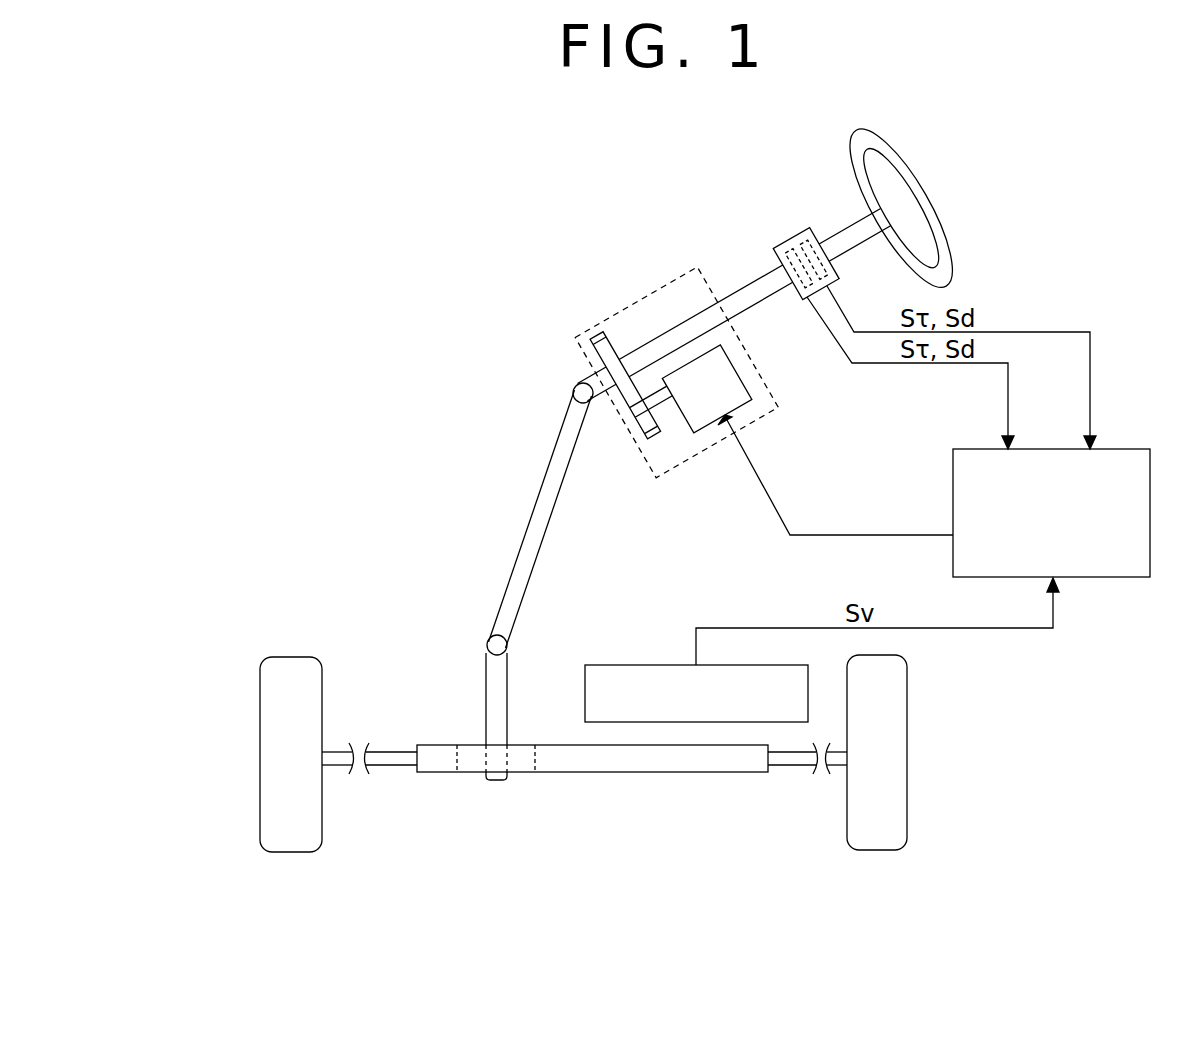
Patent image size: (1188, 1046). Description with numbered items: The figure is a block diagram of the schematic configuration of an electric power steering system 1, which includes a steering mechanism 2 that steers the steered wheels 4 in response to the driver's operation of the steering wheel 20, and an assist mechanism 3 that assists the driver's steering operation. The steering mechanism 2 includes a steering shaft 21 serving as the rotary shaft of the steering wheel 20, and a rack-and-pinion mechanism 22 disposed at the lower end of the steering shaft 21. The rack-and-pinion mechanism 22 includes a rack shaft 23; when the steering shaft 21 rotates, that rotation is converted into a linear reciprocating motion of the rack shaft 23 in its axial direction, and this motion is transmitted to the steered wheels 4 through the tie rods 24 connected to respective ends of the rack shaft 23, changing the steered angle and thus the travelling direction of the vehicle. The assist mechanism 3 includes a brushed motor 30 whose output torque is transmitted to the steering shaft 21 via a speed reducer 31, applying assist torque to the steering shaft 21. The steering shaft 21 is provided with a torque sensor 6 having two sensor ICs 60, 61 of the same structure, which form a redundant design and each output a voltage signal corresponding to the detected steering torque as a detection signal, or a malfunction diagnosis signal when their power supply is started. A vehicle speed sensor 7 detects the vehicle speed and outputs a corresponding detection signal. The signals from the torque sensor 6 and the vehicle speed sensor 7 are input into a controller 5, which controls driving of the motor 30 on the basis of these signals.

The electric power steering system 1 is at (476, 323).
The steering mechanism 2 is at (554, 408).
The assist mechanism 3 is at (636, 300).
The steered wheels 4 is at (291, 852).
The controller 5 is at (1120, 449).
The torque sensor 6 is at (791, 238).
The vehicle speed sensor 7 is at (610, 665).
The steering wheel 20 is at (942, 200).
The steering shaft 21 is at (748, 287).
The rack-and-pinion mechanism 22 is at (537, 772).
The rack shaft 23 is at (675, 772).
The tie rods 24 is at (391, 768).
The motor 30 is at (735, 367).
The speed reducer 31 is at (645, 432).
The sensor IC 60 is at (803, 243).
The sensor IC 61 is at (788, 251).